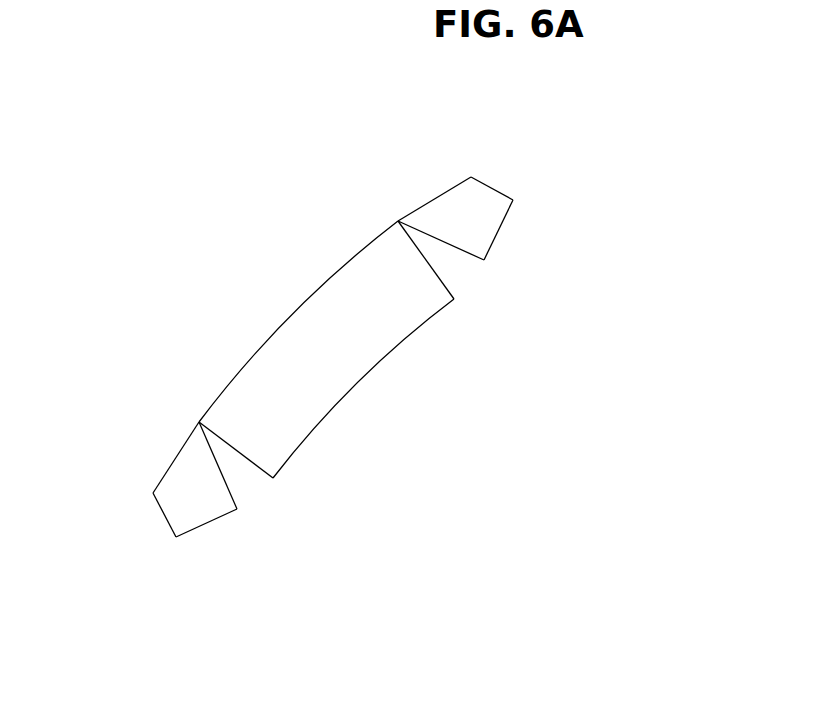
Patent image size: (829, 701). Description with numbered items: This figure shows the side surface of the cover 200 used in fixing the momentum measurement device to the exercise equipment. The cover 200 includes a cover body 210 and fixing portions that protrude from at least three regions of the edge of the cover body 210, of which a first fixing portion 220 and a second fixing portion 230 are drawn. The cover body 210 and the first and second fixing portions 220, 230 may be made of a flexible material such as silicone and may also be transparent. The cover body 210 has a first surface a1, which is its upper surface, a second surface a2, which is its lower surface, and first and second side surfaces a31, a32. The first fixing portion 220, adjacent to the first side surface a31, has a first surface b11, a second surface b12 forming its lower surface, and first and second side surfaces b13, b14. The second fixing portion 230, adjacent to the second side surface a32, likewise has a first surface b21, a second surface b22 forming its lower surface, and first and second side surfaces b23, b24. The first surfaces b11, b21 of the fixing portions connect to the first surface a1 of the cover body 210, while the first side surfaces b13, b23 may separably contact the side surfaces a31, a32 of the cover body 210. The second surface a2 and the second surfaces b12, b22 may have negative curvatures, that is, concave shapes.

The cover 200 is at (146, 214).
The cover body 210 is at (330, 313).
The first fixing portion 220 is at (190, 492).
The second fixing portion 230 is at (487, 212).
The first surface a1 is at (232, 378).
The second surface a2 is at (405, 342).
The first side surface a31 is at (258, 470).
The second side surface a32 is at (437, 278).
The first surface b11 is at (172, 452).
The second surface b12 is at (208, 525).
The first side surface b13 is at (243, 498).
The second side surface b14 is at (160, 513).
The first surface b21 is at (437, 198).
The second surface b22 is at (500, 235).
The first side surface b23 is at (473, 267).
The second side surface b24 is at (495, 184).